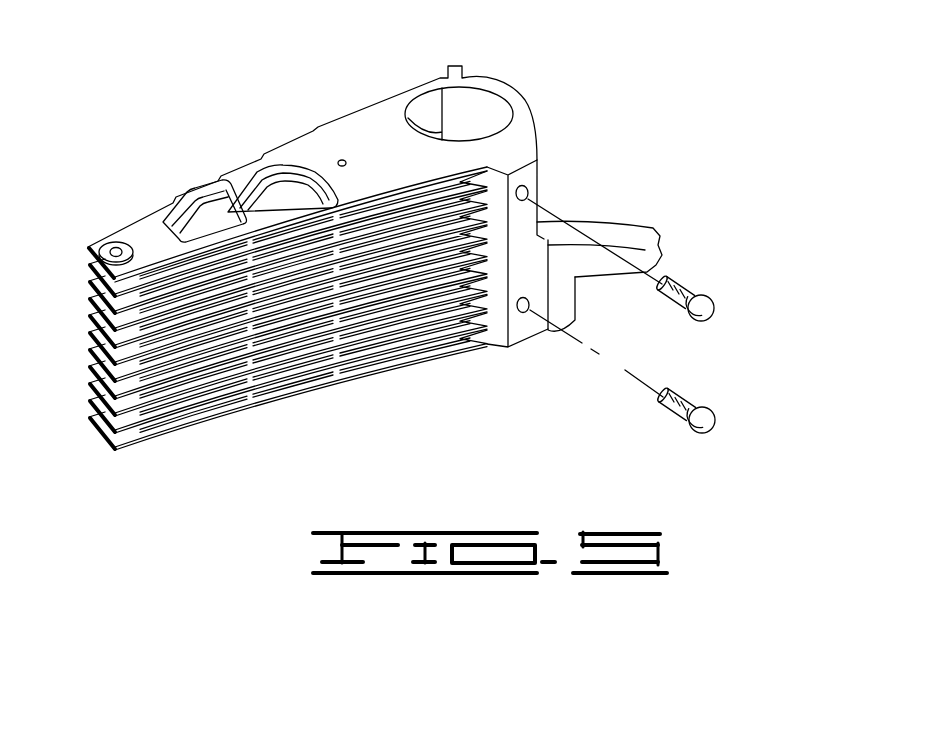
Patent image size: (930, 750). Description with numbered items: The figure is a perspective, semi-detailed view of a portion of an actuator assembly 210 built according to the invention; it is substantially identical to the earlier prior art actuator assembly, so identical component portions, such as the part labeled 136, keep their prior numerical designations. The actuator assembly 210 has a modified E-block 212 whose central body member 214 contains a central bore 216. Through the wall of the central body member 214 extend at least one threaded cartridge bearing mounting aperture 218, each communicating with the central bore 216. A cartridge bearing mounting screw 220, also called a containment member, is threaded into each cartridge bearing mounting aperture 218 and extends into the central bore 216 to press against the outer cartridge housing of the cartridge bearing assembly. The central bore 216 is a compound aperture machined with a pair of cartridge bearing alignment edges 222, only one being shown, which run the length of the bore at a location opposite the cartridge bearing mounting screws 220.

The fins 136 is at (192, 195).
The actuator assembly 210 is at (210, 127).
The E-block 212 is at (357, 110).
The central body member 214 is at (523, 135).
The central bore 216 is at (472, 90).
The cartridge bearing mounting aperture 218 is at (528, 190).
The cartridge bearing mounting screw 220 is at (706, 300).
The cartridge bearing alignment edge 222 is at (425, 115).